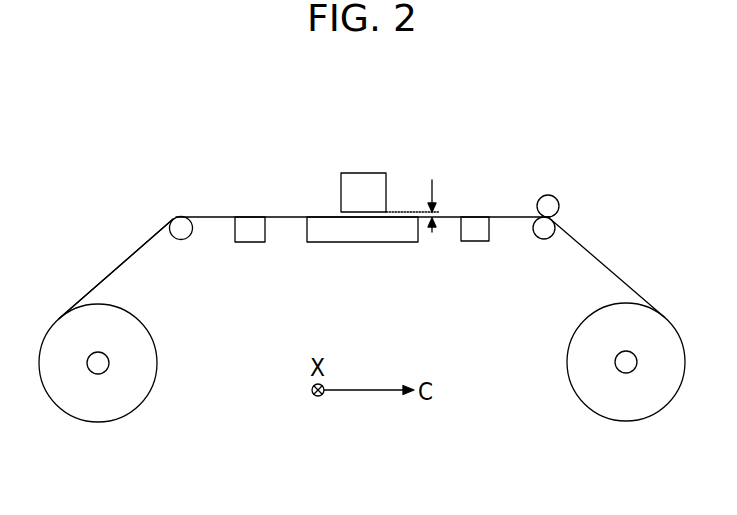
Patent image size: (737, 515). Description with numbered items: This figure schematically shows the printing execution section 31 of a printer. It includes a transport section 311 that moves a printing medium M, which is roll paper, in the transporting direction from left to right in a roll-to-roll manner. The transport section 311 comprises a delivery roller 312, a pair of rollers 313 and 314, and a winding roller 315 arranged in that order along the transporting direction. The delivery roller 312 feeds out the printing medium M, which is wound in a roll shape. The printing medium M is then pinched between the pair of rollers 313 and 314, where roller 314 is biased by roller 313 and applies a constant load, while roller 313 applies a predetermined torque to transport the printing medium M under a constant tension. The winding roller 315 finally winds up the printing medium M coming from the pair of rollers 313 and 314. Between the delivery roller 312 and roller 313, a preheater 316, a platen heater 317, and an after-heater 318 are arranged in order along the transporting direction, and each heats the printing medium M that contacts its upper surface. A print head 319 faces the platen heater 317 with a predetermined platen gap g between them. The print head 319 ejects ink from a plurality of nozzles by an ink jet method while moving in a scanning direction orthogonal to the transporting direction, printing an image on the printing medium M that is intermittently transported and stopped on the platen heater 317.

The printing execution section 31 is at (173, 108).
The transport section 311 is at (242, 378).
The delivery roller 312 is at (93, 363).
The roller 313 is at (544, 240).
The roller 314 is at (550, 201).
The winding roller 315 is at (624, 362).
The preheater 316 is at (248, 234).
The platen heater 317 is at (366, 234).
The after-heater 318 is at (471, 235).
The print head 319 is at (367, 177).
The printing medium M is at (120, 265).
The platen gap g is at (418, 203).